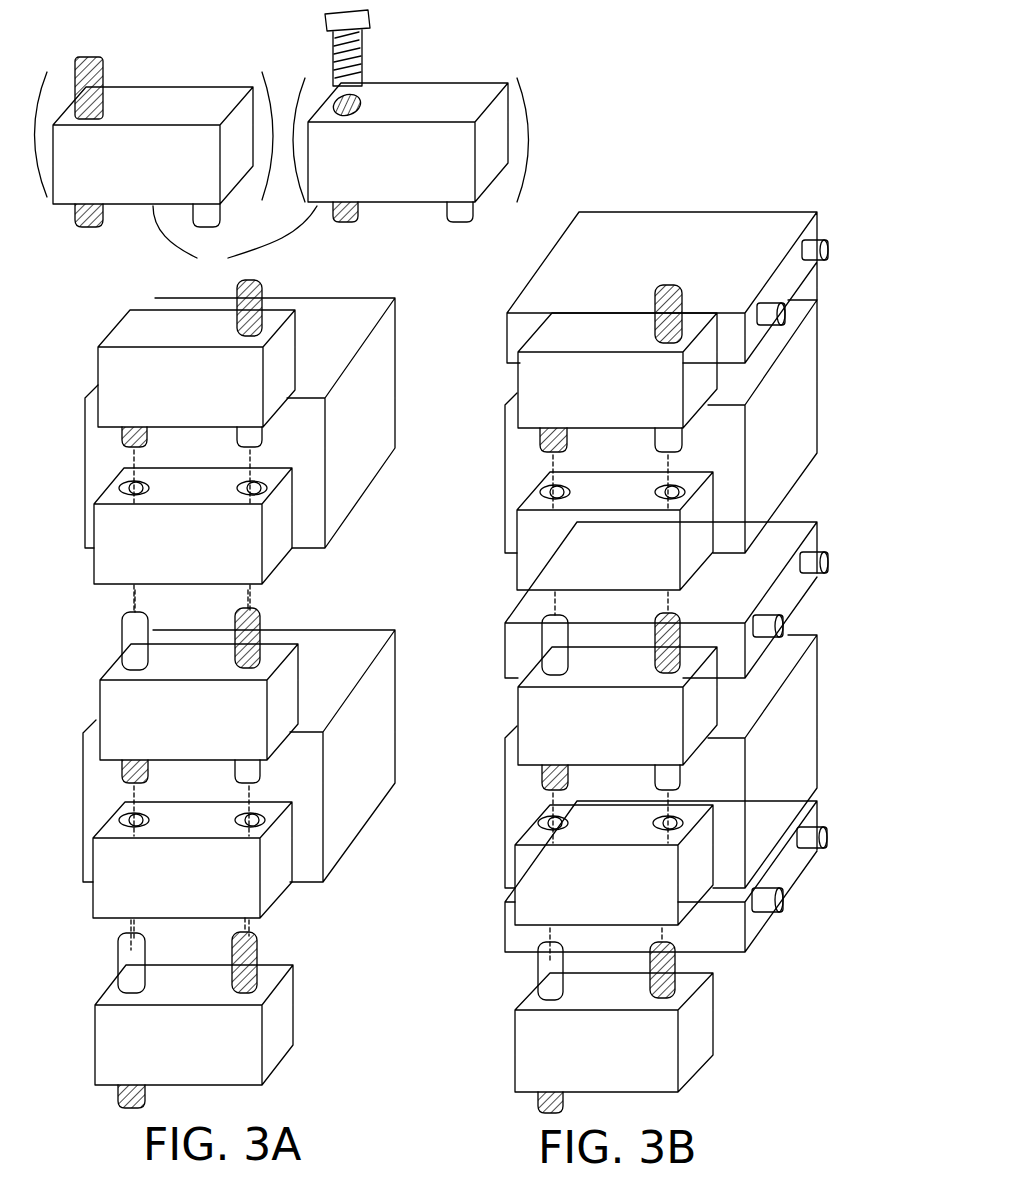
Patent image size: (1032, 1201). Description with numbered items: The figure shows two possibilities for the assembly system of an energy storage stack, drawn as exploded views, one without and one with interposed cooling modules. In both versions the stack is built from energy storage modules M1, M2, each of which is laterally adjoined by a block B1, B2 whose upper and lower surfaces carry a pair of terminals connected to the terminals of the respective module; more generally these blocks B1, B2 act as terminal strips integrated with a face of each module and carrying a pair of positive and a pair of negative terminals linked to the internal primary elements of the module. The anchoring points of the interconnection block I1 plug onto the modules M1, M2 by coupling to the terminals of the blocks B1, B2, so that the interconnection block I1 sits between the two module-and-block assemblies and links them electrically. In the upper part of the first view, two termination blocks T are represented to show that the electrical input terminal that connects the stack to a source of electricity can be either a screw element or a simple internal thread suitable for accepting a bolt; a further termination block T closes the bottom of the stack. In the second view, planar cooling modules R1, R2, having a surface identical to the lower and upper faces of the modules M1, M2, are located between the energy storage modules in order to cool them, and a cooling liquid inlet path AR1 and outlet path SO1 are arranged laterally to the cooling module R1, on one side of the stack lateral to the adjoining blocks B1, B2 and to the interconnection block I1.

In FIG. 3A, the termination block T is at (172, 325).
In FIG. 3A, the energy storage module M1 is at (355, 470).
In FIG. 3B, the energy storage module M1 is at (790, 432).
In FIG. 3A, the block B1 is at (277, 545).
In FIG. 3B, the block B1 is at (700, 537).
In FIG. 3A, the interconnection block I1 is at (97, 706).
In FIG. 3B, the interconnection block I1 is at (517, 713).
In FIG. 3A, the energy storage module M2 is at (360, 780).
In FIG. 3B, the energy storage module M2 is at (780, 750).
In FIG. 3A, the block B2 is at (277, 877).
In FIG. 3B, the block B2 is at (757, 800).
In FIG. 3B, the cooling liquid inlet path AR1 is at (829, 561).
In FIG. 3B, the cooling module R1 is at (800, 593).
In FIG. 3B, the cooling liquid outlet path SO1 is at (784, 627).
In FIG. 3B, the cooling module R2 is at (797, 875).